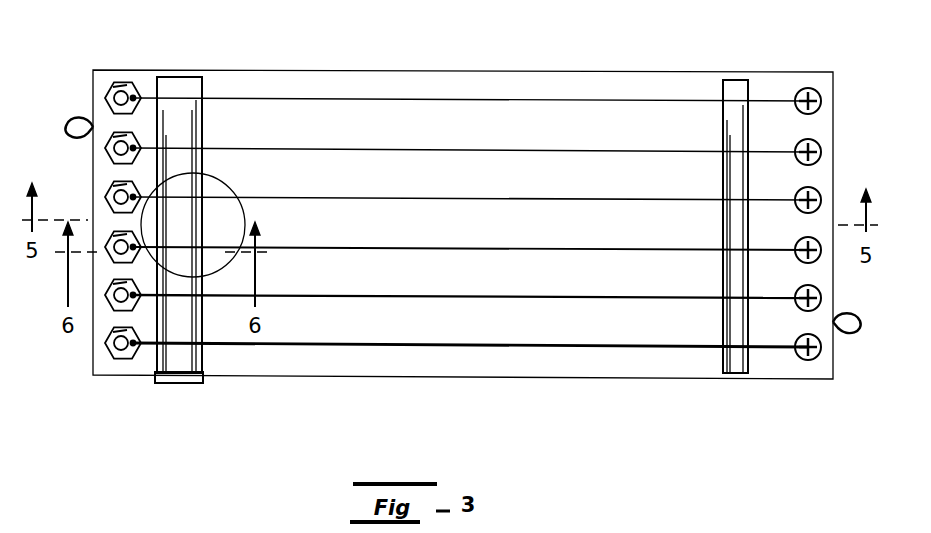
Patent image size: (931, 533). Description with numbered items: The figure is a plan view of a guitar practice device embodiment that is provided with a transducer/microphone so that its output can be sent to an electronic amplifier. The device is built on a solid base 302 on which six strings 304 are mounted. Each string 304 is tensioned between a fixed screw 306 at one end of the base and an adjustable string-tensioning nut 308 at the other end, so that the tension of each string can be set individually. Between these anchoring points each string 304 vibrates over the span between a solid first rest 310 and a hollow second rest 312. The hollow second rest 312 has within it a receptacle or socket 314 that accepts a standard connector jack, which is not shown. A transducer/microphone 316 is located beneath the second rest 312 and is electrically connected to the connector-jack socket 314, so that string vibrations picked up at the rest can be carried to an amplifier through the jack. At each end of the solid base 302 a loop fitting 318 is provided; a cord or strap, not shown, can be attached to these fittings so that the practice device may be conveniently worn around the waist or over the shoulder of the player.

The solid base 302 is at (463, 196).
The strings 304 is at (470, 229).
The fixed screw 306 is at (808, 187).
The adjustable string-tensioning nut 308 is at (125, 186).
The solid first rest 310 is at (737, 193).
The hollow second rest 312 is at (179, 193).
The receptacle or socket 314 is at (179, 417).
The transducer/microphone 316 is at (200, 145).
The loop fitting 318 is at (467, 227).